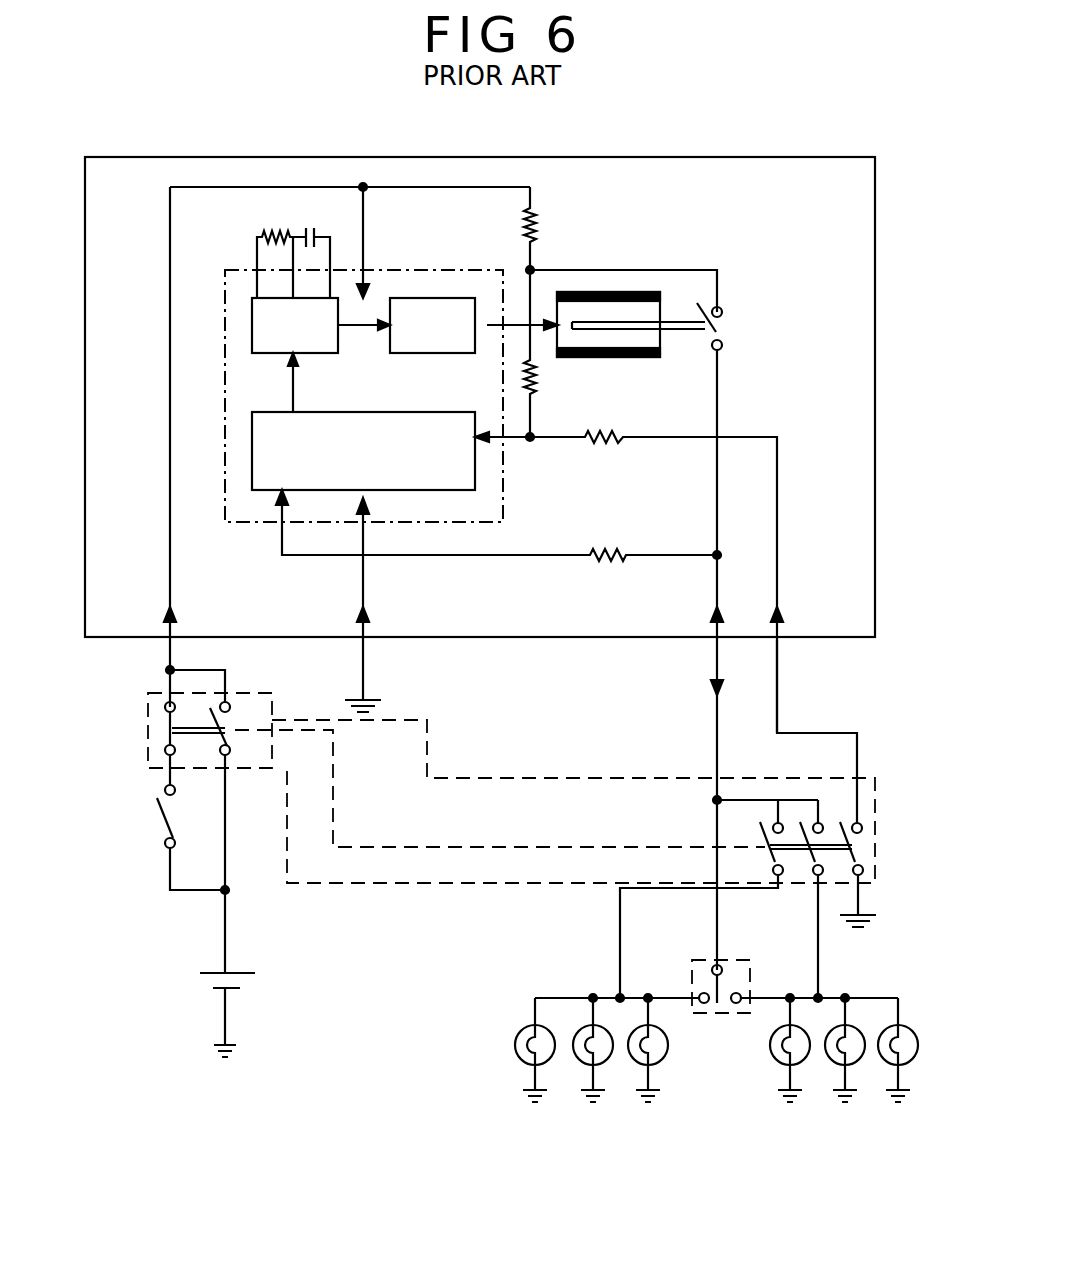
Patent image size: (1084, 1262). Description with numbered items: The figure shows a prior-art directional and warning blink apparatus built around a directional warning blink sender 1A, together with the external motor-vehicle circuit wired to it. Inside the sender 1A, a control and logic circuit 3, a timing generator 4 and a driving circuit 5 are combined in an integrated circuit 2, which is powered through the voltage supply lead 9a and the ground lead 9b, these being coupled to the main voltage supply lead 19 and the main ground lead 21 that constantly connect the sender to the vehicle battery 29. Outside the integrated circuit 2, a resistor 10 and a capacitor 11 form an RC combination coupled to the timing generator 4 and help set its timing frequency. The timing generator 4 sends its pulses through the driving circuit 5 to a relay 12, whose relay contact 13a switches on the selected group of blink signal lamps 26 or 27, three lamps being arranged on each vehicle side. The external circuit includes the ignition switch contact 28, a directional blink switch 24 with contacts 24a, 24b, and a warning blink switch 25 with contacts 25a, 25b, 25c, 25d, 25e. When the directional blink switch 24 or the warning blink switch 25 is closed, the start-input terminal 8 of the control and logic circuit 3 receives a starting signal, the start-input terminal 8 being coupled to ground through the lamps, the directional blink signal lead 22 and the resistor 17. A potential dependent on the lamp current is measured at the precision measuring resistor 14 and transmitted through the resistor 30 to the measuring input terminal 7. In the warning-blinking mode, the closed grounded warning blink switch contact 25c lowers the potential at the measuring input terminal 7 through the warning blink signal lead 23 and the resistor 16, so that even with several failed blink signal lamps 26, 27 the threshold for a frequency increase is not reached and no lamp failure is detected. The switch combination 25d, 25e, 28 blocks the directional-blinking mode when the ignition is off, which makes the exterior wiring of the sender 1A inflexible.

The directional warning blink sender 1A is at (785, 157).
The integrated circuit 2 is at (503, 520).
The control and logic circuit 3 is at (378, 412).
The timing generator 4 is at (270, 355).
The driving circuit 5 is at (430, 355).
The measuring input terminal 7 is at (483, 437).
The start-input terminal 8 is at (275, 493).
The voltage supply lead 9a is at (365, 245).
The ground lead 9b is at (365, 548).
The resistor 10 is at (285, 230).
The capacitor 11 is at (303, 212).
The relay 12 is at (620, 358).
The relay contact 13a is at (721, 318).
The precision measuring resistor 14 is at (533, 210).
The resistor 16 is at (620, 436).
The resistor 17 is at (618, 553).
The main voltage supply lead 19 is at (168, 648).
The main ground lead 21 is at (365, 660).
The directional blink signal lead 22 is at (714, 660).
The warning blink signal lead 23 is at (779, 665).
The directional blink switch 24 is at (728, 1009).
The directional blink switch contact 24a is at (706, 1012).
The directional blink switch contact 24b is at (742, 992).
The warning blink switch 25 is at (780, 897).
The warning blink switch contact 25a is at (772, 876).
The warning blink switch contact 25b is at (812, 878).
The warning blink switch contact 25c is at (866, 870).
The warning blink switch contact 25d is at (165, 710).
The warning blink switch contact 25e is at (230, 703).
The blink signal lamps 26 is at (545, 1068).
The blink signal lamps 27 is at (800, 1068).
The ignition switch contact 28 is at (165, 822).
The vehicle battery 29 is at (245, 972).
The resistor 30 is at (525, 382).